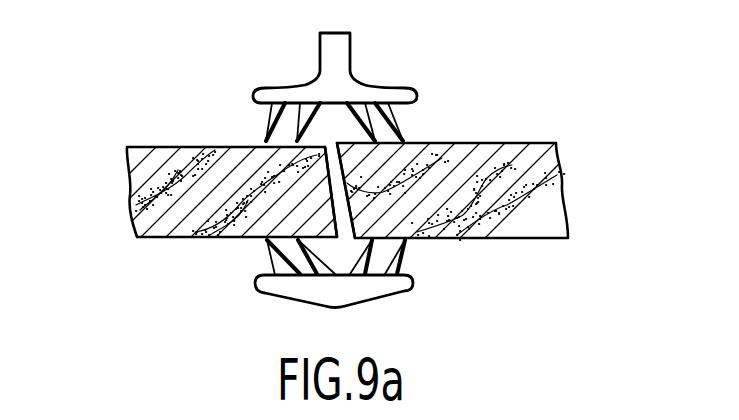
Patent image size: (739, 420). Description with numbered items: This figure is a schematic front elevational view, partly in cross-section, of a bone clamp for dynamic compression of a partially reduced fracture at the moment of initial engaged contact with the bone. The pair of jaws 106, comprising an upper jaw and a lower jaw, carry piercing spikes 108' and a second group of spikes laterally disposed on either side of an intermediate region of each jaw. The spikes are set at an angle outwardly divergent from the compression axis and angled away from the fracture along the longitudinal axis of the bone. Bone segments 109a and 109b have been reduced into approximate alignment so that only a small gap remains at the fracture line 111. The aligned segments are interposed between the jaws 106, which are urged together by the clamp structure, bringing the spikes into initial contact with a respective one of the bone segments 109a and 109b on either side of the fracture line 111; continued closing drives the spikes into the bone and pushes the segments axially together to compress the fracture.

The jaws 106 is at (273, 93).
The spikes 108' is at (252, 203).
The bone segment 109a is at (136, 195).
The bone segment 109b is at (561, 181).
The fracture line 111 is at (327, 163).